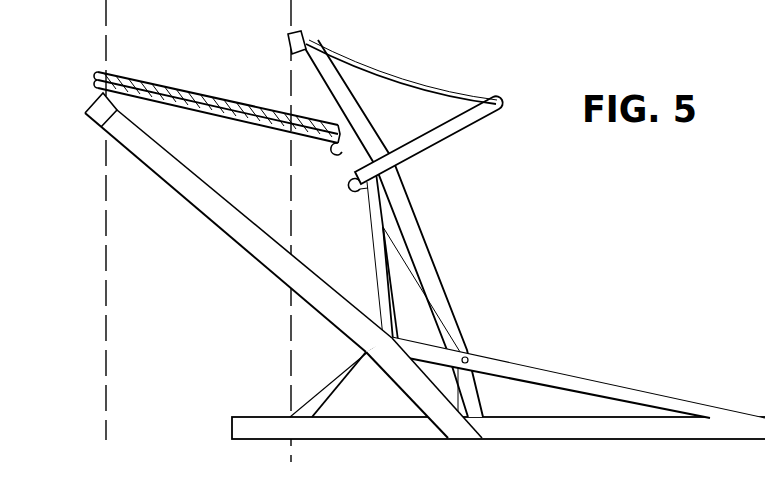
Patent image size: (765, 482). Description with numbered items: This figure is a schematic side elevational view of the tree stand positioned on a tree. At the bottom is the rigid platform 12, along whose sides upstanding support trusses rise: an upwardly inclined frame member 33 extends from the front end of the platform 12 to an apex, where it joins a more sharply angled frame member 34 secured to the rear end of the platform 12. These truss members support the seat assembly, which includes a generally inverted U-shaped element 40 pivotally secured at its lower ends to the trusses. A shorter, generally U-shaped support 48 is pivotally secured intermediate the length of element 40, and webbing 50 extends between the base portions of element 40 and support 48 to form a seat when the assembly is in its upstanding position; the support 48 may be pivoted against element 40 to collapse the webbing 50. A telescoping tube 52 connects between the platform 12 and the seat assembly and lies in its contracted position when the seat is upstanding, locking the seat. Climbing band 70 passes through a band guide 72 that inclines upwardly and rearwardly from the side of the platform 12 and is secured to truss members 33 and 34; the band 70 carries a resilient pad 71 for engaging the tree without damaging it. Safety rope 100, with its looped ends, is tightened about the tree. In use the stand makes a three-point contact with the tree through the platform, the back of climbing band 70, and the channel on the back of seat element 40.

The platform 12 is at (567, 433).
The upwardly inclined frame member 33 is at (562, 382).
The more sharply angled frame member 34 is at (325, 395).
The inverted U-shaped element 40 is at (406, 239).
The U-shaped support 48 is at (424, 141).
The webbing 50 is at (385, 72).
The telescoping tube 52 is at (372, 248).
The climbing band 70 is at (252, 255).
The resilient pad 71 is at (88, 107).
The band guide 72 is at (458, 437).
The safety rope 100 is at (162, 86).